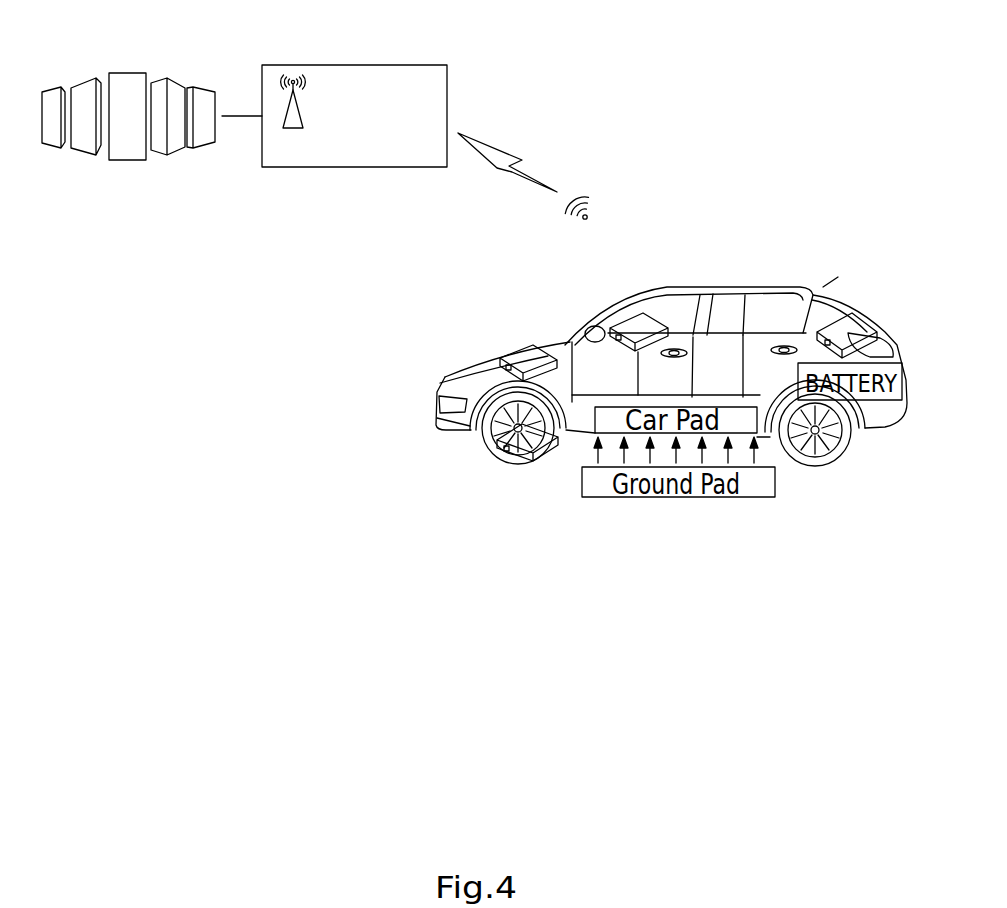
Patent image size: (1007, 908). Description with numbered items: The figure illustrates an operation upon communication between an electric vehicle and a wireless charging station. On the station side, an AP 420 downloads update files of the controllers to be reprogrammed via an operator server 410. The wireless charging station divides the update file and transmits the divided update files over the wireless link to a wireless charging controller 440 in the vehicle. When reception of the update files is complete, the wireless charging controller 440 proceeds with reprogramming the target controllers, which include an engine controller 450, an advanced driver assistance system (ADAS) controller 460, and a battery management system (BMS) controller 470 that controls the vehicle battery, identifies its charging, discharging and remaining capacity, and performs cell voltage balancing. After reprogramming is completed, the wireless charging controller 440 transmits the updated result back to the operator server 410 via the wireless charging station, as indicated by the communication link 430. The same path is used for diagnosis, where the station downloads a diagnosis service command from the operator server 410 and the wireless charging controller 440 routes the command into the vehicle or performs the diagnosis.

The operator server 410 is at (170, 84).
The AP 420 is at (402, 65).
The wireless charging station communication link 430 is at (520, 161).
The wireless charging controller 440 is at (648, 201).
The engine controller 450 is at (501, 288).
The ADAS controller 460 is at (496, 437).
The BMS controller 470 is at (875, 263).